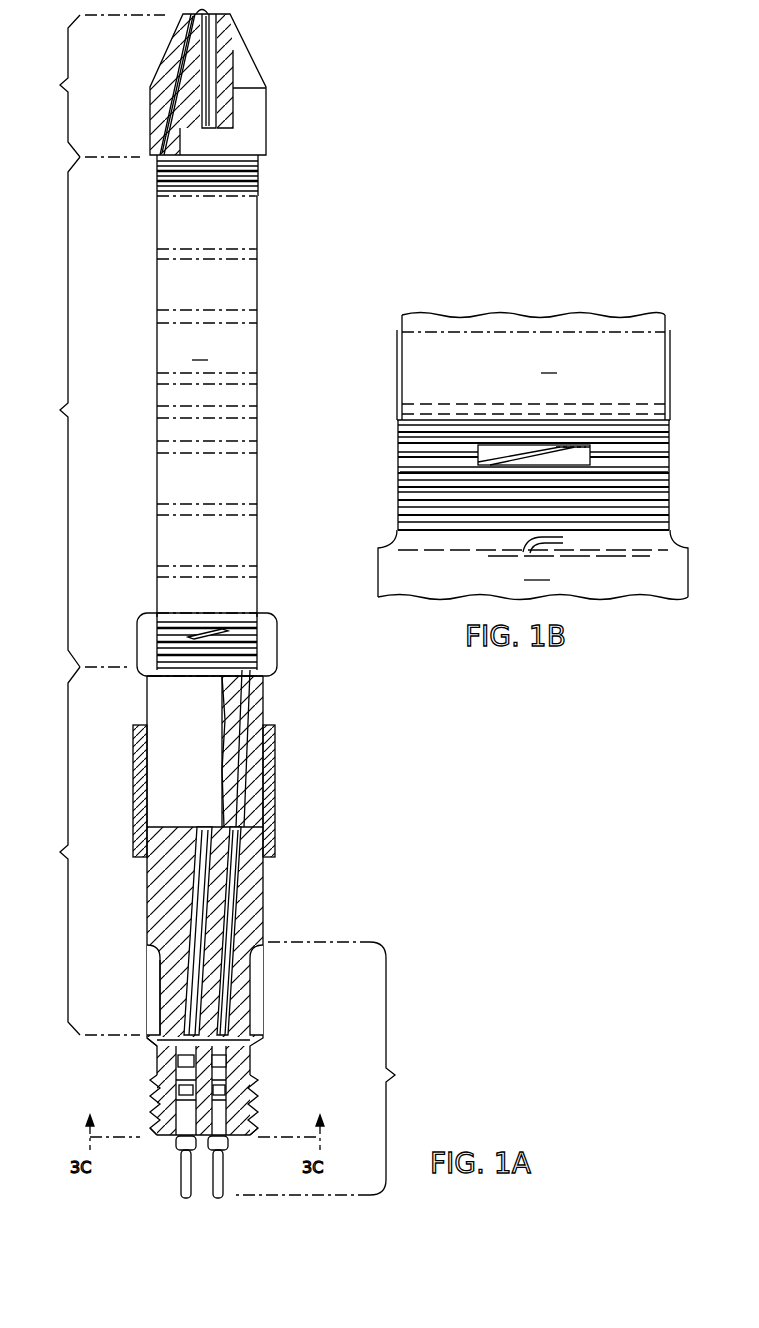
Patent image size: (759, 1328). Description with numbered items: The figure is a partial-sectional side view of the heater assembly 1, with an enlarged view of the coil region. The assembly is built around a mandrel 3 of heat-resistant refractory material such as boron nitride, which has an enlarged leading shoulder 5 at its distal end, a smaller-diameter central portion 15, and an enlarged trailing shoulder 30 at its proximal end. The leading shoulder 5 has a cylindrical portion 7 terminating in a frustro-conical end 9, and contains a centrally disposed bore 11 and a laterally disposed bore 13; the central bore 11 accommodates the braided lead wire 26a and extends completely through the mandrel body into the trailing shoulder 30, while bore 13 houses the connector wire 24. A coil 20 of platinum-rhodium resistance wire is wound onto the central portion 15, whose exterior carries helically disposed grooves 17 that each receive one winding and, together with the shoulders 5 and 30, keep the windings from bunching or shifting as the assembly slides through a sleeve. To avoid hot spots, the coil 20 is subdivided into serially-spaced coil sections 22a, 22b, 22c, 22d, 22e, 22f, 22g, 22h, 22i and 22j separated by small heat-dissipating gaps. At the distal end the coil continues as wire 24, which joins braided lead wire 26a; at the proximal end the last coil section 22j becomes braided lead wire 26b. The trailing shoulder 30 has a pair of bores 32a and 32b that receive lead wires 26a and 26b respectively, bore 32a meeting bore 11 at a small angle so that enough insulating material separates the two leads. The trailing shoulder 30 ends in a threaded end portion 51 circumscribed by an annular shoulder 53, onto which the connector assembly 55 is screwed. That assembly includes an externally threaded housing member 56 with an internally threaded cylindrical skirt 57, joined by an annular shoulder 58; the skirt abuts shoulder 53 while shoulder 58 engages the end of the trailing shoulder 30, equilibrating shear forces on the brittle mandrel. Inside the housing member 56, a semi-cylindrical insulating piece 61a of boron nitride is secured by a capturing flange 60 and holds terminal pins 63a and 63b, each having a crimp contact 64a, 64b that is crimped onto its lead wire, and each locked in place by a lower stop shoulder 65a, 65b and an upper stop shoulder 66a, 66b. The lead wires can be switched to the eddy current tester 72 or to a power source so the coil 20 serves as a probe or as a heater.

In FIG. 1A, the heater assembly 1 is at (62, 40).
In FIG. 1A, the mandrel 3 is at (207, 406).
In FIG. 1B, the mandrel 3 is at (533, 367).
In FIG. 1A, the leading shoulder 5 is at (100, 86).
In FIG. 1A, the cylindrical portion 7 is at (248, 136).
In FIG. 1A, the frustro-conical end 9 is at (250, 67).
In FIG. 1A, the centrally disposed bore 11 is at (214, 33).
In FIG. 1A, the laterally disposed bore 13 is at (182, 40).
In FIG. 1A, the central portion 15 is at (72, 412).
In FIG. 1B, the helically disposed grooves 17 is at (398, 445).
In FIG. 1A, the coil 20 is at (266, 169).
In FIG. 1A, the coil section 22a is at (160, 196).
In FIG. 1A, the coil section 22b is at (168, 232).
In FIG. 1A, the coil section 22c is at (170, 282).
In FIG. 1A, the coil section 22d is at (168, 357).
In FIG. 1A, the coil section 22e is at (170, 396).
In FIG. 1A, the coil section 22f is at (170, 427).
In FIG. 1A, the coil section 22g is at (172, 486).
In FIG. 1A, the coil section 22h is at (167, 543).
In FIG. 1A, the coil section 22i is at (167, 593).
In FIG. 1B, the coil section 22i is at (435, 408).
In FIG. 1A, the coil section 22j is at (155, 643).
In FIG. 1B, the coil section 22j is at (487, 492).
In FIG. 1A, the connector wire 24 is at (167, 100).
In FIG. 1A, the braided lead wire 26a is at (213, 97).
In FIG. 1A, the braided lead wire 26b is at (237, 880).
In FIG. 1A, the trailing shoulder 30 is at (139, 871).
In FIG. 1B, the trailing shoulder 30 is at (533, 565).
In FIG. 1A, the lead wire bore 32a is at (204, 925).
In FIG. 1A, the lead wire bore 32b is at (245, 803).
In FIG. 1A, the threaded end portion 51 is at (153, 980).
In FIG. 1A, the annular shoulder 53 is at (152, 952).
In FIG. 1A, the connector assembly 55 is at (298, 1068).
In FIG. 1A, the housing member 56 is at (155, 1137).
In FIG. 1A, the cylindrical skirt 57 is at (250, 978).
In FIG. 1A, the annular shoulder 58 is at (152, 1046).
In FIG. 1A, the capturing flange 60 is at (240, 1140).
In FIG. 1A, the semi-cylindrical insulating piece 61a is at (247, 1076).
In FIG. 1A, the terminal pin 63a is at (182, 1176).
In FIG. 1A, the terminal pin 63b is at (222, 1182).
In FIG. 1A, the crimp contact 64a is at (167, 1073).
In FIG. 1A, the crimp contact 64b is at (243, 1063).
In FIG. 1A, the lower stop shoulder 65a is at (155, 1118).
In FIG. 1A, the lower stop shoulder 65b is at (245, 1112).
In FIG. 1A, the upper stop shoulder 66a is at (150, 1087).
In FIG. 1A, the upper stop shoulder 66b is at (222, 1065).
In FIG. 1A, the tester 72 is at (275, 760).